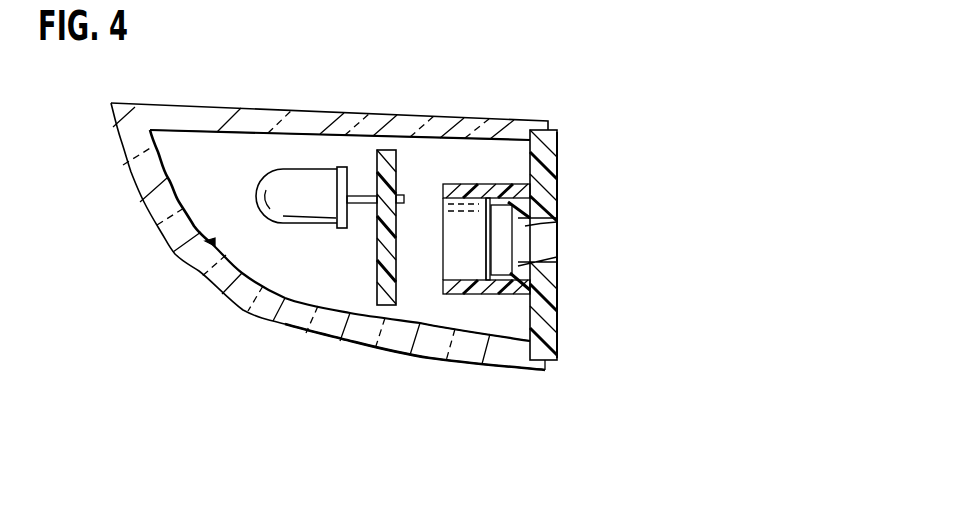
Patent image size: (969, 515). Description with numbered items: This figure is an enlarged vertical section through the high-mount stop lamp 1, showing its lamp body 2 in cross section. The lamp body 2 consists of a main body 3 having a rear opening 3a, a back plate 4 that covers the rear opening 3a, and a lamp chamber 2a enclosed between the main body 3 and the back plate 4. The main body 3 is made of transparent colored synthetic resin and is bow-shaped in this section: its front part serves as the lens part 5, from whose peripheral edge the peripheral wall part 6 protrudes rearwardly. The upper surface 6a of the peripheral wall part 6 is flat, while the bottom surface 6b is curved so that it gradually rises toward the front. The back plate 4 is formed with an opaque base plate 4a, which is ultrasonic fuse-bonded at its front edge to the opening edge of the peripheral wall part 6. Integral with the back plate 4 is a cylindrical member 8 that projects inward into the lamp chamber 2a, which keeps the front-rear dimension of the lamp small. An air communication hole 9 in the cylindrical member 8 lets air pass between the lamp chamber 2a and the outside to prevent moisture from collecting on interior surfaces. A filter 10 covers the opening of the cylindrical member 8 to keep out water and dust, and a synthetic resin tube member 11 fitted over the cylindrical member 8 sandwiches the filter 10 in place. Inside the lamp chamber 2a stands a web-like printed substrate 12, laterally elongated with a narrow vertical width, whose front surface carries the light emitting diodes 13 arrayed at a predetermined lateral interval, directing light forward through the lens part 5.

The high-mount stop lamp 1 is at (672, 78).
The lamp body 2 is at (590, 68).
The lamp chamber 2a is at (242, 188).
The main body 3 is at (433, 111).
The rear opening 3a is at (558, 320).
The back plate 4 is at (560, 153).
The base plate 4a is at (560, 152).
The lens part 5 is at (150, 217).
The peripheral wall part 6 is at (515, 368).
The upper surface 6a is at (195, 117).
The bottom surface 6b is at (463, 345).
The cylindrical member 8 is at (525, 224).
The air communication hole 9 is at (522, 262).
The filter 10 is at (483, 223).
The tube member 11 is at (410, 325).
The printed substrate 12 is at (378, 266).
The light emitting diode 13 is at (296, 216).